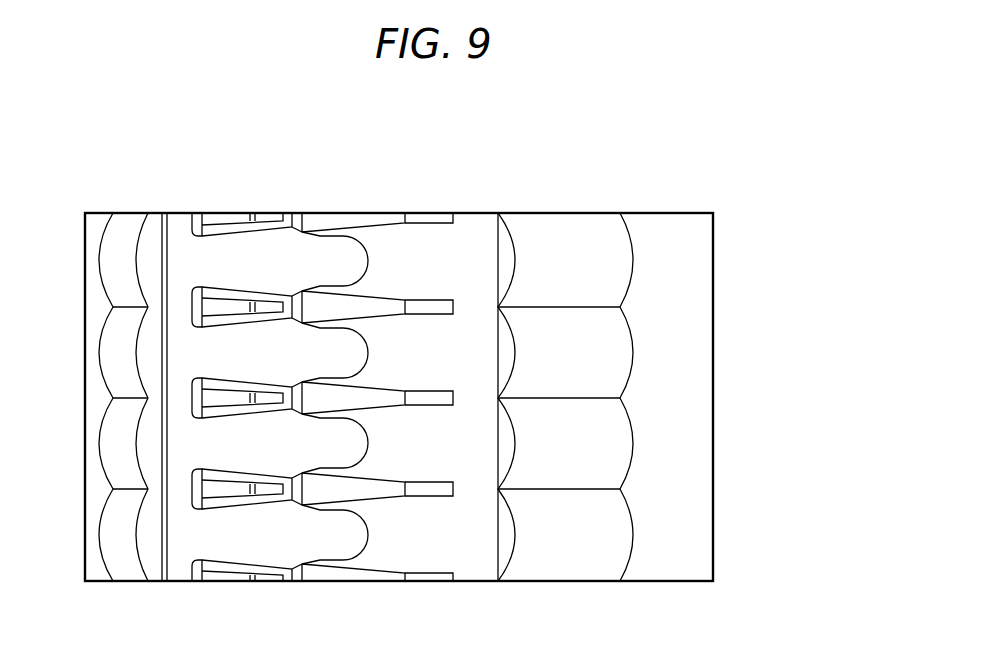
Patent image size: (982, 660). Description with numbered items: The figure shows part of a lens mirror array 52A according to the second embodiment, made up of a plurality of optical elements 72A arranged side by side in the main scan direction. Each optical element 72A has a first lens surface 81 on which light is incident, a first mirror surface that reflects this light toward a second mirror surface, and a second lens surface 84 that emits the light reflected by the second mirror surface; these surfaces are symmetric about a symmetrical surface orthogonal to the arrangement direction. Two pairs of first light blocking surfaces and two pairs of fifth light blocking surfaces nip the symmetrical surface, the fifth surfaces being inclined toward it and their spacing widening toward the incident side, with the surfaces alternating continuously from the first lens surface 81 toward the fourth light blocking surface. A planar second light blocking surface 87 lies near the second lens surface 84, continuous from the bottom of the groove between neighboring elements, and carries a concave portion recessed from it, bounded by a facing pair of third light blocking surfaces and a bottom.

The lens mirror array 52A is at (435, 169).
The optical element 72A is at (734, 533).
The first lens surface 81 is at (105, 449).
The second lens surface 84 is at (558, 572).
The second light blocking surface 87 is at (467, 535).